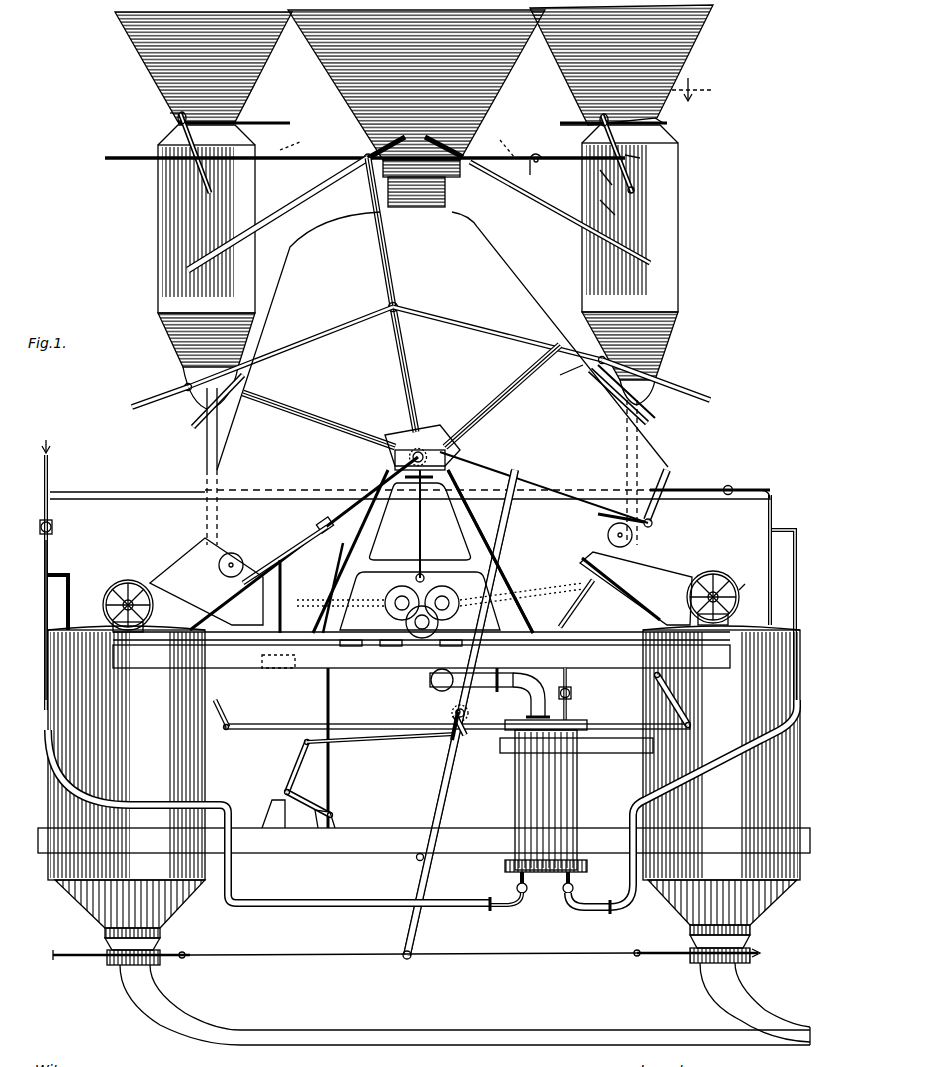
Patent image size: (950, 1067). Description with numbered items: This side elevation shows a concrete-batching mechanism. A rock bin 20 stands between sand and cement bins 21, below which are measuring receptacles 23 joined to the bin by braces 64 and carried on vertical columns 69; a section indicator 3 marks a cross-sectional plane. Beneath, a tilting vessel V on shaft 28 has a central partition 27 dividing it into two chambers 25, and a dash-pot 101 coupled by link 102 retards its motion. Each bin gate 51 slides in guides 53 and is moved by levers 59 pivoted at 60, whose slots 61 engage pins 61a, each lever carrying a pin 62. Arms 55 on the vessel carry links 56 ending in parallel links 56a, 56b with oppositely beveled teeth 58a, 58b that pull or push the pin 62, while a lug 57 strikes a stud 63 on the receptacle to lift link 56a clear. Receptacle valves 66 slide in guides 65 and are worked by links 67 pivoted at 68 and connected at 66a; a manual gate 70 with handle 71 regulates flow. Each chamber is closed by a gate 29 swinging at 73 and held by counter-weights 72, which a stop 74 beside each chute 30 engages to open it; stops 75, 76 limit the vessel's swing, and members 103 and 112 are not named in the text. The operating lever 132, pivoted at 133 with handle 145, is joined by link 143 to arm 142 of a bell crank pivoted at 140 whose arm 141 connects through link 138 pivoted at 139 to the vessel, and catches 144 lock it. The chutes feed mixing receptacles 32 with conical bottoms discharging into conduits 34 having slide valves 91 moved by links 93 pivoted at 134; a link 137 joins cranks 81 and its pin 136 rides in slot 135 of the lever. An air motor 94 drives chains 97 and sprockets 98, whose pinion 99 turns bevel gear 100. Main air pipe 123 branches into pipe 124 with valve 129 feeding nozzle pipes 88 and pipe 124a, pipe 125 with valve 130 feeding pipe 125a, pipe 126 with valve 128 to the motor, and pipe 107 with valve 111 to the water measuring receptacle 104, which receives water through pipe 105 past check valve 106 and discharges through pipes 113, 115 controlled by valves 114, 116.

The section line 3 is at (692, 89).
The bin 20 is at (416, 108).
The sand and cement bins 21 is at (150, 62).
The measuring chambers or receptacles 23 is at (206, 267).
The chambers 25 is at (442, 341).
The central partition 27 is at (392, 274).
The shaft 28 is at (395, 460).
The gate 29 is at (670, 478).
The chutes 30 is at (206, 581).
The mixing receptacles 32 is at (126, 753).
The discharge or delivery conduit 34 is at (270, 1028).
The gate or valve 51 is at (176, 110).
The guides 53 is at (255, 122).
The arms 55 is at (362, 190).
The links 56 is at (408, 158).
The link 56a is at (476, 163).
The link 56b is at (392, 137).
The beveled tooth or lug 57 is at (215, 162).
The tooth 58a is at (537, 163).
The tooth 58b is at (530, 172).
The levers 59 is at (642, 161).
The pivot 60 is at (636, 192).
The slots 61 is at (178, 128).
The pins 61a is at (602, 116).
The horizontal pin 62 is at (609, 212).
The stud 63 is at (605, 181).
The supporting braces 64 is at (556, 215).
The guide 65 is at (700, 392).
The gate or valve 66 is at (640, 370).
The lever pivot 66a is at (572, 372).
The links 67 is at (470, 330).
The pivot 68 is at (398, 306).
The vertical columns 69 is at (207, 450).
The slide valve or gate 70 is at (600, 395).
The handle 71 is at (645, 417).
The counter-weights 72 is at (233, 553).
The axis 73 is at (652, 523).
The stop 74 is at (582, 560).
The stop 75 is at (280, 556).
The stop 76 is at (247, 642).
The crank 81 is at (222, 710).
The pipes 88 is at (152, 905).
The slide valve 91 is at (76, 957).
The links 93 is at (568, 957).
The air motor 94 is at (392, 592).
The drive chains 97 is at (516, 596).
The sprocket wheel 98 is at (130, 580).
The bevel pinion 99 is at (749, 579).
The bevel gear 100 is at (698, 616).
The dash-pot 101 is at (294, 658).
The link 102 is at (296, 596).
The brace 103 is at (334, 580).
The water measuring receptacle 104 is at (546, 801).
The water pipe 105 is at (534, 700).
The check valve 106 is at (460, 730).
The compressed air pipe 107 is at (568, 673).
The valve 111 is at (572, 694).
The tank support bar 112 is at (604, 753).
The water discharge pipe 113 is at (492, 910).
The valve 114 is at (525, 893).
The water discharge pipe 115 is at (606, 914).
The valve 116 is at (566, 896).
The main air supply pipe 123 is at (50, 452).
The branch pipe 124 is at (50, 548).
The pipe 124a is at (68, 632).
The branch pipe 125 is at (766, 512).
The pipe 125a is at (793, 548).
The branch pipe 126 is at (420, 536).
The valve 128 is at (425, 578).
The valve 129 is at (52, 525).
The valve 130 is at (735, 488).
The operating lever 132 is at (440, 784).
The pivot 133 is at (424, 860).
The pivot 134 is at (405, 960).
The slot 135 is at (452, 718).
The pin 136 is at (452, 708).
The link 137 is at (352, 720).
The link 138 is at (326, 688).
The pivot 139 is at (337, 522).
The pivot 140 is at (270, 800).
The bell crank arm 141 is at (318, 800).
The bell crank arm 142 is at (293, 762).
The link 143 is at (372, 745).
The stops or catches 144 is at (375, 648).
The handle 145 is at (510, 476).